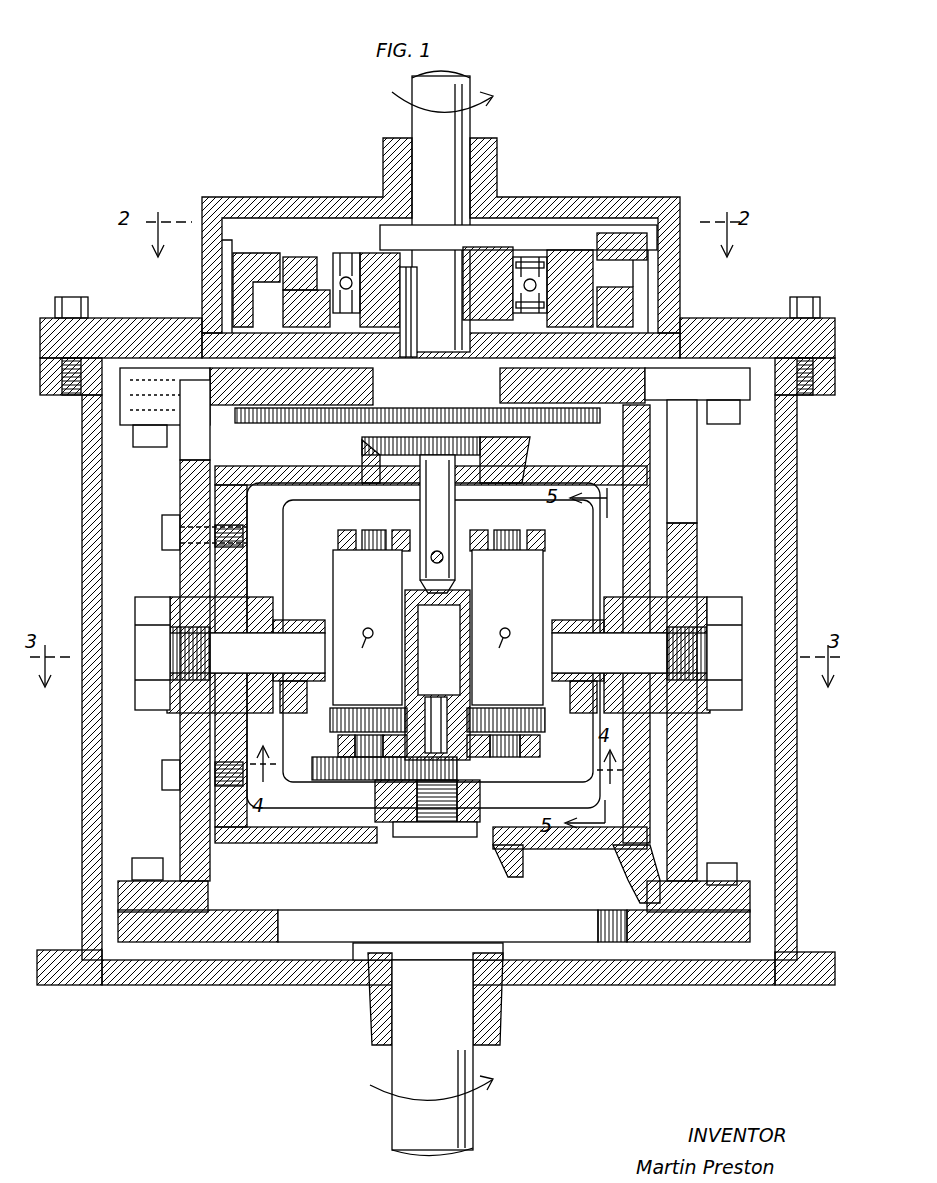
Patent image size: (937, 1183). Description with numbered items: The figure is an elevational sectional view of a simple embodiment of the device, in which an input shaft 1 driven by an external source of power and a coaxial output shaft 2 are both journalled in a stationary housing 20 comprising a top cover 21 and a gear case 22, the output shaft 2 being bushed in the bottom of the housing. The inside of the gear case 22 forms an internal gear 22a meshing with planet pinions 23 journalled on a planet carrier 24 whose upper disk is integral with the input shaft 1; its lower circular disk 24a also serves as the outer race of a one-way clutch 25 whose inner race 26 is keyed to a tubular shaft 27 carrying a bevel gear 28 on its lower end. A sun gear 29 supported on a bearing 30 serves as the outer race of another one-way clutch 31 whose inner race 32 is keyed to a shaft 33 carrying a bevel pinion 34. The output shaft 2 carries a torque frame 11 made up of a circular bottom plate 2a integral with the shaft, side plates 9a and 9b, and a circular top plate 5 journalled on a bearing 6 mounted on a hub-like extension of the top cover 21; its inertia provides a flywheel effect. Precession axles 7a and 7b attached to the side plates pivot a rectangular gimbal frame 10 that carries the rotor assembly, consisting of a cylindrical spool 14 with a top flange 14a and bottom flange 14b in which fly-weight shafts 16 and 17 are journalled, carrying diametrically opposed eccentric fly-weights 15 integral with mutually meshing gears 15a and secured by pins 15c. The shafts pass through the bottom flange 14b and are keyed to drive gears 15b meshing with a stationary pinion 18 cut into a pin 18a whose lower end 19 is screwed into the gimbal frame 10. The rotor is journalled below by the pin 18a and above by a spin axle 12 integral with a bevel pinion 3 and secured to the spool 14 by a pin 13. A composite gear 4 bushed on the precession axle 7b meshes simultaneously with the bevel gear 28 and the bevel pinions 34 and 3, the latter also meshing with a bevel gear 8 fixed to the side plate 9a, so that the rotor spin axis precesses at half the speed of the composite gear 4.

The input shaft 1 is at (472, 80).
The output shaft 2 is at (396, 1120).
The circular bottom plate 2a is at (590, 915).
The bevel pinion 3 is at (392, 468).
The composite gear 4 is at (650, 515).
The circular top plate 5 is at (122, 385).
The bearing 6 is at (600, 382).
The precession axle 7a is at (140, 636).
The precession axle 7b is at (742, 614).
The bevel gear 8 is at (215, 488).
The side plate 9a is at (178, 808).
The side plate 9b is at (700, 820).
The gimbal frame 10 is at (285, 521).
The torque frame 11 is at (212, 944).
The spin axle 12 is at (450, 518).
The pin 13 is at (441, 547).
The cylindrical spool 14 is at (445, 646).
The circular top flange 14a is at (340, 541).
The bottom flange 14b is at (340, 746).
The eccentric fly-weights 15 is at (370, 593).
The gears 15a is at (330, 720).
The drive gears 15b is at (325, 782).
The pins 15c is at (429, 654).
The fly-weight shaft 16 is at (505, 745).
The fly-weight shaft 17 is at (365, 782).
The stationary pinion 18 is at (470, 840).
The pin 18a is at (442, 745).
The lower end 19 is at (432, 832).
The stationary housing 20 is at (84, 515).
The top cover 21 is at (48, 320).
The gear case 22 is at (212, 197).
The internal gear 22a is at (232, 262).
The planet pinions 23 is at (258, 255).
The planet carrier 24 is at (488, 248).
The lower circular disk 24a is at (640, 300).
The one-way clutch 25 is at (565, 252).
The inner race 26 is at (526, 258).
The tubular shaft 27 is at (370, 260).
The bevel gear 28 is at (282, 421).
The sun gear 29 is at (340, 256).
The bearing 30 is at (300, 258).
The one-way clutch 31 is at (540, 264).
The inner race 32 is at (405, 268).
The shaft 33 is at (445, 232).
The bevel pinion 34 is at (366, 445).